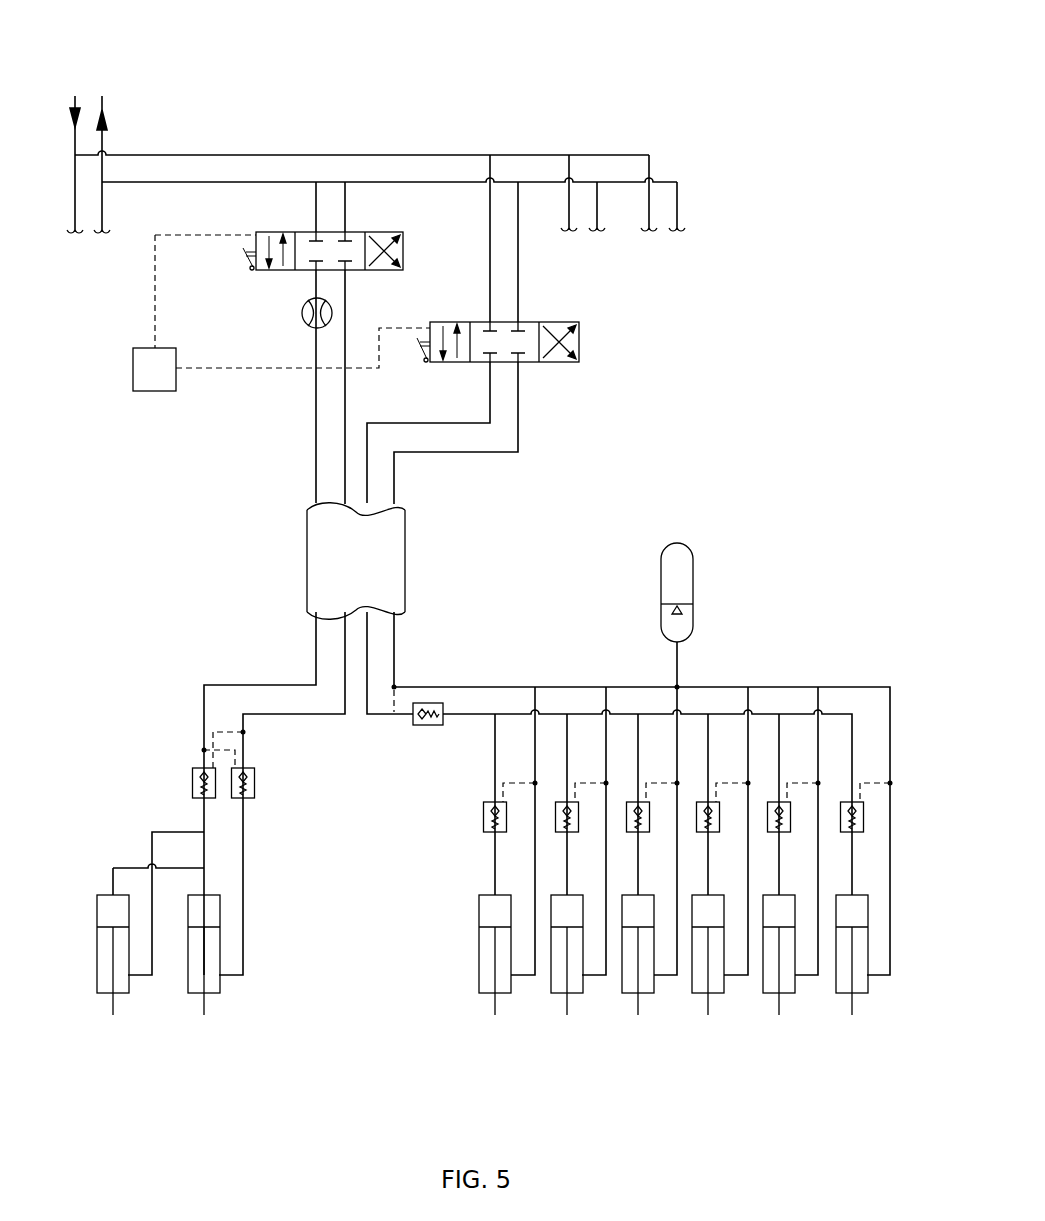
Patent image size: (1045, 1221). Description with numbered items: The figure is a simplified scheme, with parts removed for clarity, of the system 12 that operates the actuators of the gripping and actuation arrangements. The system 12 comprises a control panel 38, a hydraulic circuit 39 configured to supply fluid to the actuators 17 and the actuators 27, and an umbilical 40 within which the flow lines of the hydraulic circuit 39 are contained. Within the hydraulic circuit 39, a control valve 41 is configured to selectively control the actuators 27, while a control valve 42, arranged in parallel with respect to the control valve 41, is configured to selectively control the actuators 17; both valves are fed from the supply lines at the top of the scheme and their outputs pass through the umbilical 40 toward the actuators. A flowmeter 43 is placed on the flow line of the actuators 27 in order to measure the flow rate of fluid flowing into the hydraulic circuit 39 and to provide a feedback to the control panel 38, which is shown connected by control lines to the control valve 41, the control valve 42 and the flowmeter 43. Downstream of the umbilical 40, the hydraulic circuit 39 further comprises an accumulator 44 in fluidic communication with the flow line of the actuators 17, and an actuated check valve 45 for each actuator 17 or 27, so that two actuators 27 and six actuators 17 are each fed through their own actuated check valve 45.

The system 12 is at (790, 112).
The actuator 17 is at (485, 982).
The actuator 27 is at (106, 975).
The control panel 38 is at (147, 372).
The hydraulic circuit 39 is at (190, 550).
The umbilical 40 is at (377, 570).
The control valve 41 is at (302, 272).
The control valve 42 is at (530, 340).
The flowmeter 43 is at (315, 327).
The accumulator 44 is at (677, 577).
The actuated check valve 45 is at (193, 785).